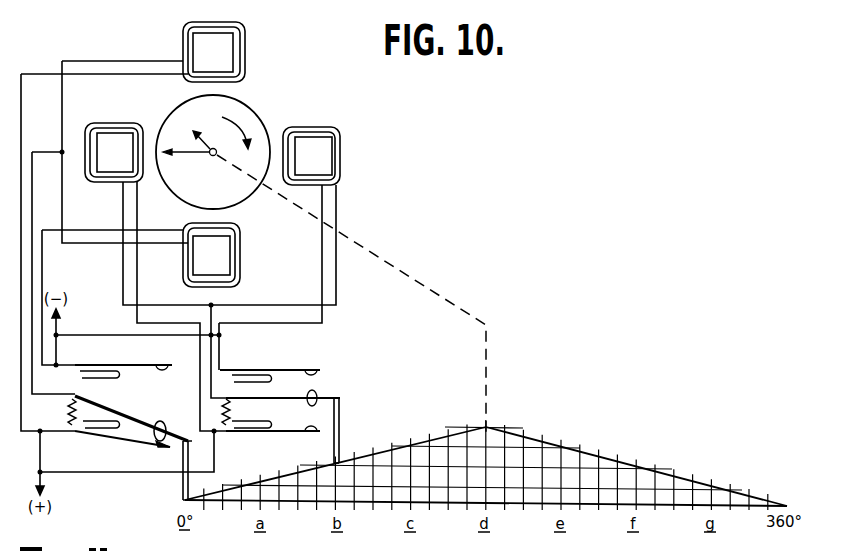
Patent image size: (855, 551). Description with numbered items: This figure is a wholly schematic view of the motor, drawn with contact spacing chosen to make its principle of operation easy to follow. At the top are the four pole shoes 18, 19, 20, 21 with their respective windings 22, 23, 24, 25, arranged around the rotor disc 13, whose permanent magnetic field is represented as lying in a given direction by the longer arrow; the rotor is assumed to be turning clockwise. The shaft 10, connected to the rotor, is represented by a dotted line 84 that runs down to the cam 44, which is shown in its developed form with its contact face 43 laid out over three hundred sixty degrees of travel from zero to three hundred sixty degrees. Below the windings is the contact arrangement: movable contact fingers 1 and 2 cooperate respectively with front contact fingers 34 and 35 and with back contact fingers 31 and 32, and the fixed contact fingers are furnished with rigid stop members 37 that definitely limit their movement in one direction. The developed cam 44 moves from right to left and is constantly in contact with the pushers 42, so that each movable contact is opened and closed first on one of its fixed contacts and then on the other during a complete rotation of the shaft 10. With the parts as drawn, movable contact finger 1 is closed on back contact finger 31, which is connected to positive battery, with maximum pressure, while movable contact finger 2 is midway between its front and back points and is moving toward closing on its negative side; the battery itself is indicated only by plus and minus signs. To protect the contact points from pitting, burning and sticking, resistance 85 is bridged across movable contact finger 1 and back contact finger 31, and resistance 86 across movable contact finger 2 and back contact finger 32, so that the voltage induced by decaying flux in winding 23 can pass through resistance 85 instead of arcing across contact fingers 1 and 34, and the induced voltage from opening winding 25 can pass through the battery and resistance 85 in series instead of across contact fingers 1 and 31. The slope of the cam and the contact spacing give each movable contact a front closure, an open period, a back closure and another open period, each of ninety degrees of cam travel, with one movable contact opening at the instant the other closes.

The movable contact finger 1 is at (118, 413).
The movable contact finger 2 is at (274, 398).
The shaft 10 is at (211, 158).
The rotor disc 13 is at (257, 116).
The pole shoe 18 is at (122, 134).
The pole shoe 19 is at (233, 63).
The pole shoe 20 is at (333, 169).
The pole shoe 21 is at (231, 248).
The winding 22 is at (96, 124).
The winding 23 is at (246, 40).
The winding 24 is at (341, 144).
The winding 25 is at (241, 271).
The back contact finger 31 is at (99, 438).
The back contact finger 32 is at (292, 433).
The front contact finger 34 is at (127, 365).
The front contact finger 35 is at (271, 368).
The rigid stop member 37 is at (88, 378).
The pusher 42 is at (182, 479).
The contact face 43 is at (433, 440).
The cam 44 is at (590, 458).
The dotted line 84 is at (488, 352).
The resistance 85 is at (70, 414).
The resistance 86 is at (240, 412).